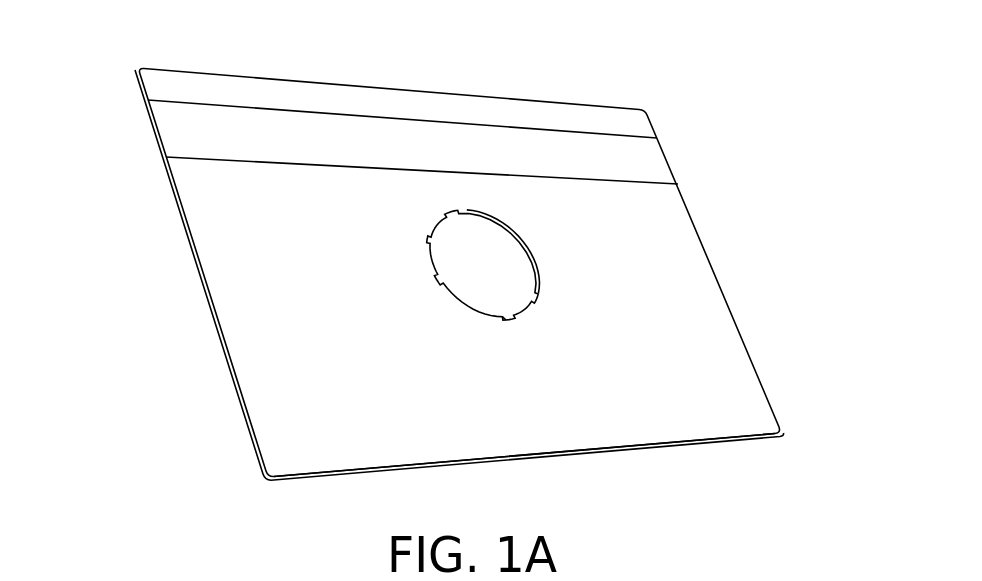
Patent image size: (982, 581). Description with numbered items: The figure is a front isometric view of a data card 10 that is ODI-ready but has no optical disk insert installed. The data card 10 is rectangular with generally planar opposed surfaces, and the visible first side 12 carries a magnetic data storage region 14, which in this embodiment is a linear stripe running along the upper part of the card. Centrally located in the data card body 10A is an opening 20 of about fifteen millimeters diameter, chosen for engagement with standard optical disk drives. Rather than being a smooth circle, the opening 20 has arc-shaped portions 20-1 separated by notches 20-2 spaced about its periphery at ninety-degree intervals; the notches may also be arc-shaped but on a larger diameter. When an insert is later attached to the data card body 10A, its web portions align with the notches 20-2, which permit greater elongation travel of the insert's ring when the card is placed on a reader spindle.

The data card 10 is at (178, 290).
The data card body 10A is at (635, 448).
The first side 12 is at (285, 408).
The magnetic data storage region 14 is at (237, 128).
The opening 20 is at (568, 258).
The arc-shaped portions 20-1 is at (528, 300).
The notches 20-2 is at (505, 320).